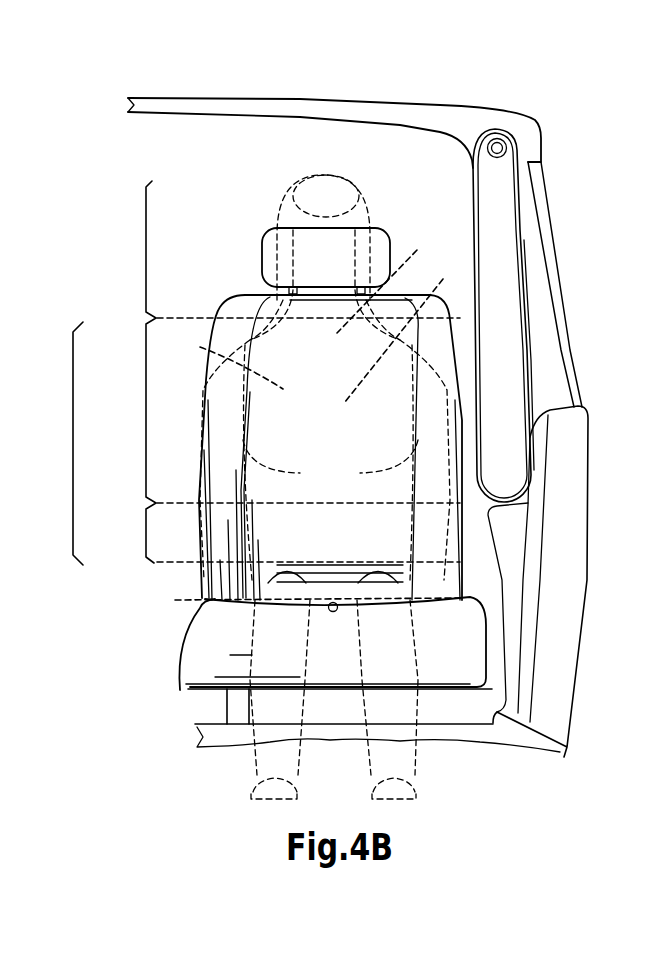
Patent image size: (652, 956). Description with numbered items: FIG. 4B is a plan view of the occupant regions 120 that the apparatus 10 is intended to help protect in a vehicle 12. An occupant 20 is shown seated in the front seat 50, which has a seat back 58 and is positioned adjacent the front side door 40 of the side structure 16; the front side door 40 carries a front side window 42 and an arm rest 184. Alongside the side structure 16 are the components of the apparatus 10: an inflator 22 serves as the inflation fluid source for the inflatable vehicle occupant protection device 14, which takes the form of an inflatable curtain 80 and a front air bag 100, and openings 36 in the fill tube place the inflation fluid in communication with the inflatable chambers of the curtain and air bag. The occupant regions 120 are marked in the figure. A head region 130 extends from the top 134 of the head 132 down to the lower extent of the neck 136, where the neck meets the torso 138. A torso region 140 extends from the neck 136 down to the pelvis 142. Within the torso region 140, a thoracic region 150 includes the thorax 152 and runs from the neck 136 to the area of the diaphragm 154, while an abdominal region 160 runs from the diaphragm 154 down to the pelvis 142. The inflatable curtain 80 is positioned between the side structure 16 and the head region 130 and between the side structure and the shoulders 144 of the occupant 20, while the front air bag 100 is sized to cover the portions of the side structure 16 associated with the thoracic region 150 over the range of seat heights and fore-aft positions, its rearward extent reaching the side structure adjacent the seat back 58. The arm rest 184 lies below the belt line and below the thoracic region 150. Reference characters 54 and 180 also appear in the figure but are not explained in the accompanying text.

The apparatus 10 is at (458, 100).
The vehicle 12 is at (412, 100).
The inflatable vehicle occupant protection device 14 is at (530, 188).
The side structure 16 is at (565, 560).
The occupant 20 is at (300, 190).
The inflator 22 is at (499, 138).
The openings 36 is at (281, 520).
The front side door 40 is at (565, 614).
The front side window 42 is at (561, 330).
The front seat 50 is at (460, 648).
The seat cushion front 54 is at (205, 640).
The seat back 58 is at (432, 343).
The inflatable curtain 80 is at (531, 236).
The front air bag 100 is at (503, 272).
The regions 120 is at (104, 289).
The head region 130 is at (146, 232).
The head 132 is at (335, 237).
The top of the head 134 is at (323, 175).
The neck 136 is at (398, 282).
The torso 138 is at (405, 330).
The torso region 140 is at (73, 438).
The pelvis 142 is at (460, 580).
The shoulders 144 is at (222, 387).
The thoracic region 150 is at (146, 413).
The thorax 152 is at (342, 637).
The diaphragm 154 is at (333, 503).
The abdominal region 160 is at (146, 530).
The lap region 180 is at (175, 600).
The arm rest 184 is at (503, 523).